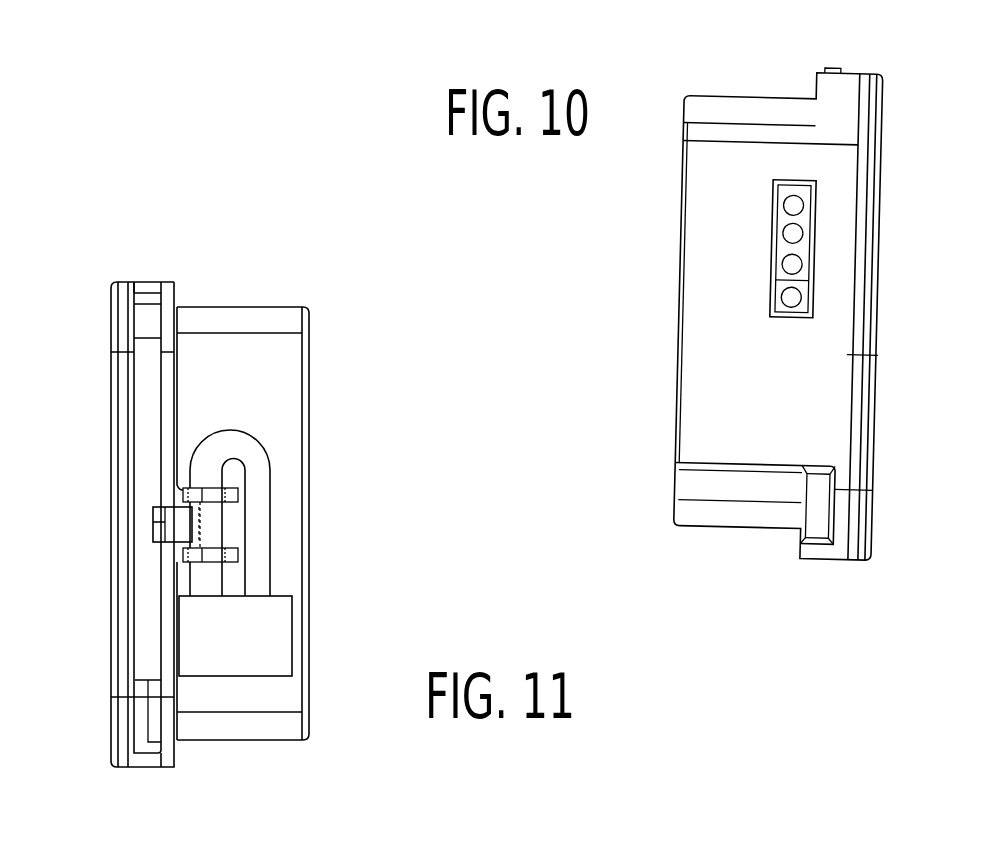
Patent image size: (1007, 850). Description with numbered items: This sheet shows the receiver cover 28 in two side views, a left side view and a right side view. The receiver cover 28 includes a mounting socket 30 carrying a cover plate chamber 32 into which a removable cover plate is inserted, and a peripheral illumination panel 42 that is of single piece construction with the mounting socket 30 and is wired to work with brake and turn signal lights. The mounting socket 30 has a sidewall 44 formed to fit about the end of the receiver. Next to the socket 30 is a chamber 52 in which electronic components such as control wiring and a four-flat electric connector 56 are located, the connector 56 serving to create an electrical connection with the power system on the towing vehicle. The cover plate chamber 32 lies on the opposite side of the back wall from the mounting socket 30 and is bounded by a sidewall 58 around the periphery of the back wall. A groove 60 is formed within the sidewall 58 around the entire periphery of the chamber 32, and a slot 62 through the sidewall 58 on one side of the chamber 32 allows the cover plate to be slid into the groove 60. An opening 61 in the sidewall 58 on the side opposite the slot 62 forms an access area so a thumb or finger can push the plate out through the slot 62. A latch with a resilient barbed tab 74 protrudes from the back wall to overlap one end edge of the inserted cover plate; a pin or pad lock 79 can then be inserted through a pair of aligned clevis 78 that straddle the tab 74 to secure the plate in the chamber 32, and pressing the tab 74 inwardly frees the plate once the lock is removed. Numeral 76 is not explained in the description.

In FIG. 11, the receiver cover 28 is at (278, 286).
In FIG. 10, the receiver cover 28 is at (650, 375).
In FIG. 11, the mounting socket 30 is at (310, 406).
In FIG. 11, the cover plate chamber 32 is at (145, 392).
In FIG. 10, the cover plate chamber 32 is at (937, 369).
In FIG. 11, the illumination panel 42 is at (111, 687).
In FIG. 11, the sidewall 44 is at (298, 362).
In FIG. 10, the chamber 52 is at (770, 385).
In FIG. 10, the 4-flat electric connector 56 is at (770, 248).
In FIG. 11, the sidewall 58 is at (151, 280).
In FIG. 10, the sidewall 58 is at (838, 70).
In FIG. 11, the groove 60 is at (145, 340).
In FIG. 10, the opening 61 is at (825, 518).
In FIG. 11, the slot 62 is at (147, 608).
In FIG. 11, the resilient barbed tab 74 is at (182, 522).
In FIG. 11, the button stem 76 is at (153, 513).
In FIG. 11, the clevis 78 is at (180, 483).
In FIG. 11, the pin or pad lock 79 is at (235, 445).